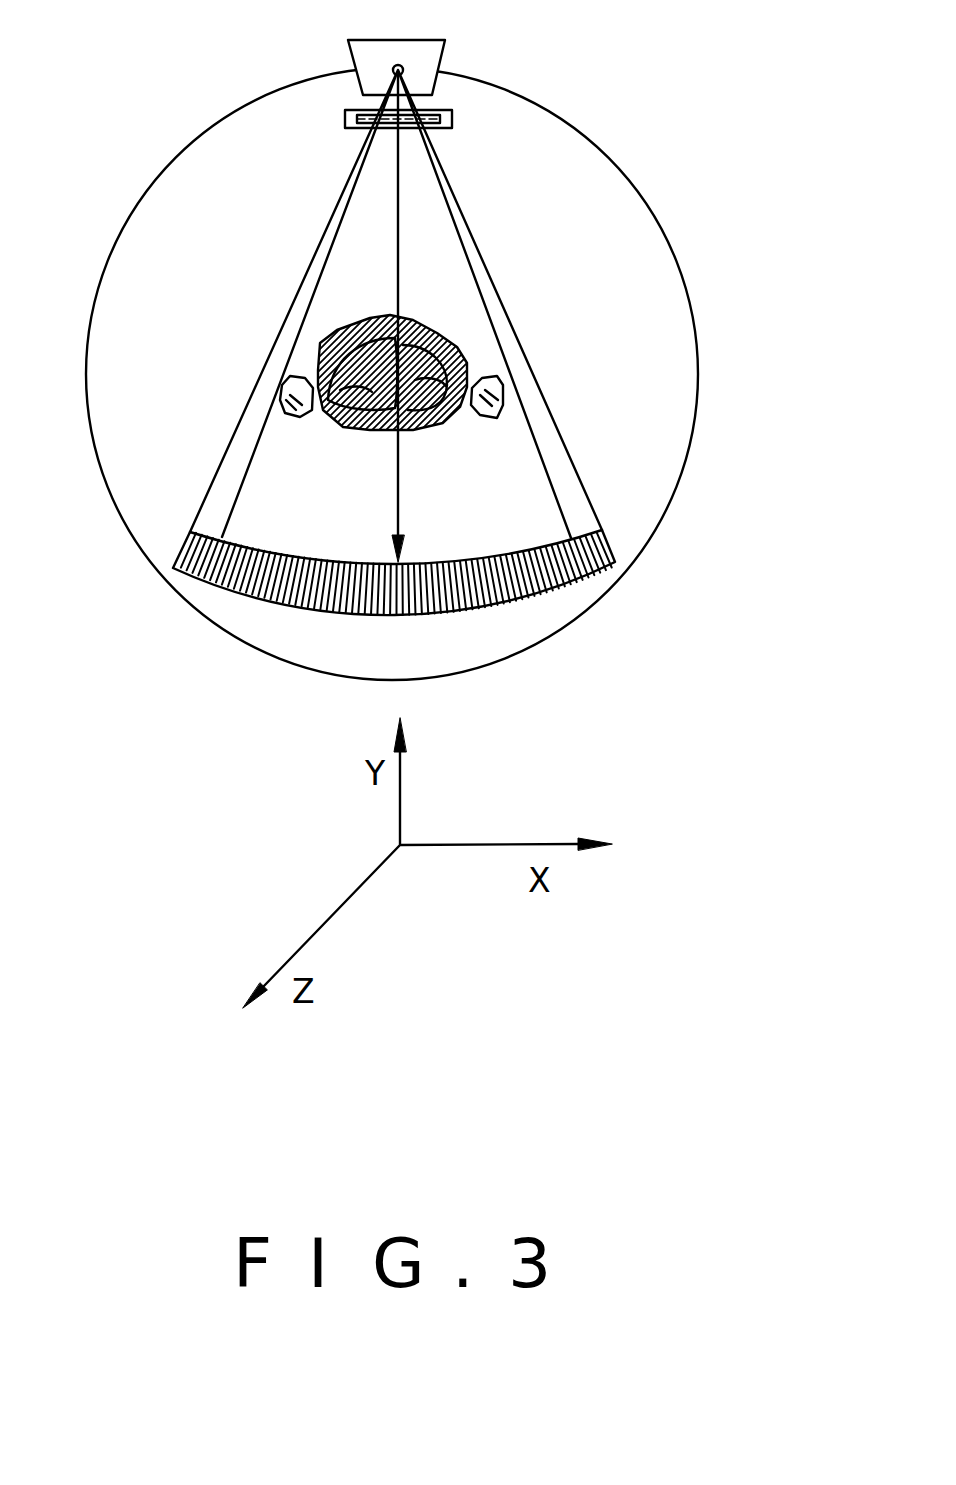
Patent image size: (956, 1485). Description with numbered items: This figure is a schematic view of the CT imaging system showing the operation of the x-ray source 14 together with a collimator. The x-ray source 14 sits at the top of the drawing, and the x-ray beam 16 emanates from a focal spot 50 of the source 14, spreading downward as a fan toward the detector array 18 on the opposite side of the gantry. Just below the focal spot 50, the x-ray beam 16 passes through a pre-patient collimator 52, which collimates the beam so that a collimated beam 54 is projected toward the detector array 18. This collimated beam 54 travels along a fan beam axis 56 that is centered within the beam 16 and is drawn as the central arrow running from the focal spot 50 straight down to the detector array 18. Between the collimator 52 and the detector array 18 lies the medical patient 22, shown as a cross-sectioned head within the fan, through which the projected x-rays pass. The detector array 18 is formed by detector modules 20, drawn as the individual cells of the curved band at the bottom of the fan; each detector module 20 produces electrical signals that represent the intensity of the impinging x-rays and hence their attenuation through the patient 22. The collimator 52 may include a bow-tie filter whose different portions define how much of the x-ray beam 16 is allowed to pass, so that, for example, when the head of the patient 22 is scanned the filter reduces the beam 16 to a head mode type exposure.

The x-ray source 14 is at (420, 63).
The x-ray beam 16 is at (500, 242).
The detector array 18 is at (411, 551).
The detector modules 20 is at (272, 607).
The medical patient 22 is at (441, 333).
The focal spot 50 is at (392, 68).
The pre-patient collimator 52 is at (452, 118).
The collimated beam 54 is at (240, 414).
The fan beam axis 56 is at (402, 467).